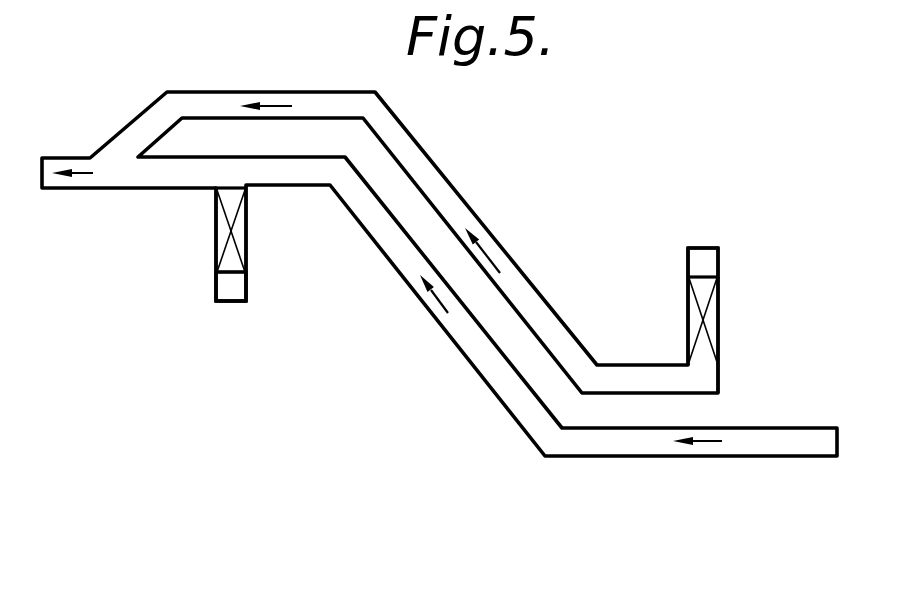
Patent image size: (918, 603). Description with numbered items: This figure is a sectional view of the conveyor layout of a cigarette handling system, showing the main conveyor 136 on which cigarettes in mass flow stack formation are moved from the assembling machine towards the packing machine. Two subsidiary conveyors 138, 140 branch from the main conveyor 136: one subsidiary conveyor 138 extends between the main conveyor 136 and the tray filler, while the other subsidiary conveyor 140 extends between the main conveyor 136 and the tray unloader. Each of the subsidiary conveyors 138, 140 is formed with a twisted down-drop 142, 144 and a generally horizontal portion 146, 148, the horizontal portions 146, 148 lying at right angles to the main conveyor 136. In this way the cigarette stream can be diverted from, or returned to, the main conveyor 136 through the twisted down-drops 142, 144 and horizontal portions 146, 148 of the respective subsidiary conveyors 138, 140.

The main conveyor 136 is at (65, 158).
The subsidiary conveyor 138 is at (201, 226).
The subsidiary conveyor 140 is at (514, 225).
The twisted down-drop 142 is at (247, 250).
The twisted down-drop 144 is at (719, 308).
The generally horizontal portion 146 is at (215, 291).
The generally horizontal portion 148 is at (719, 256).